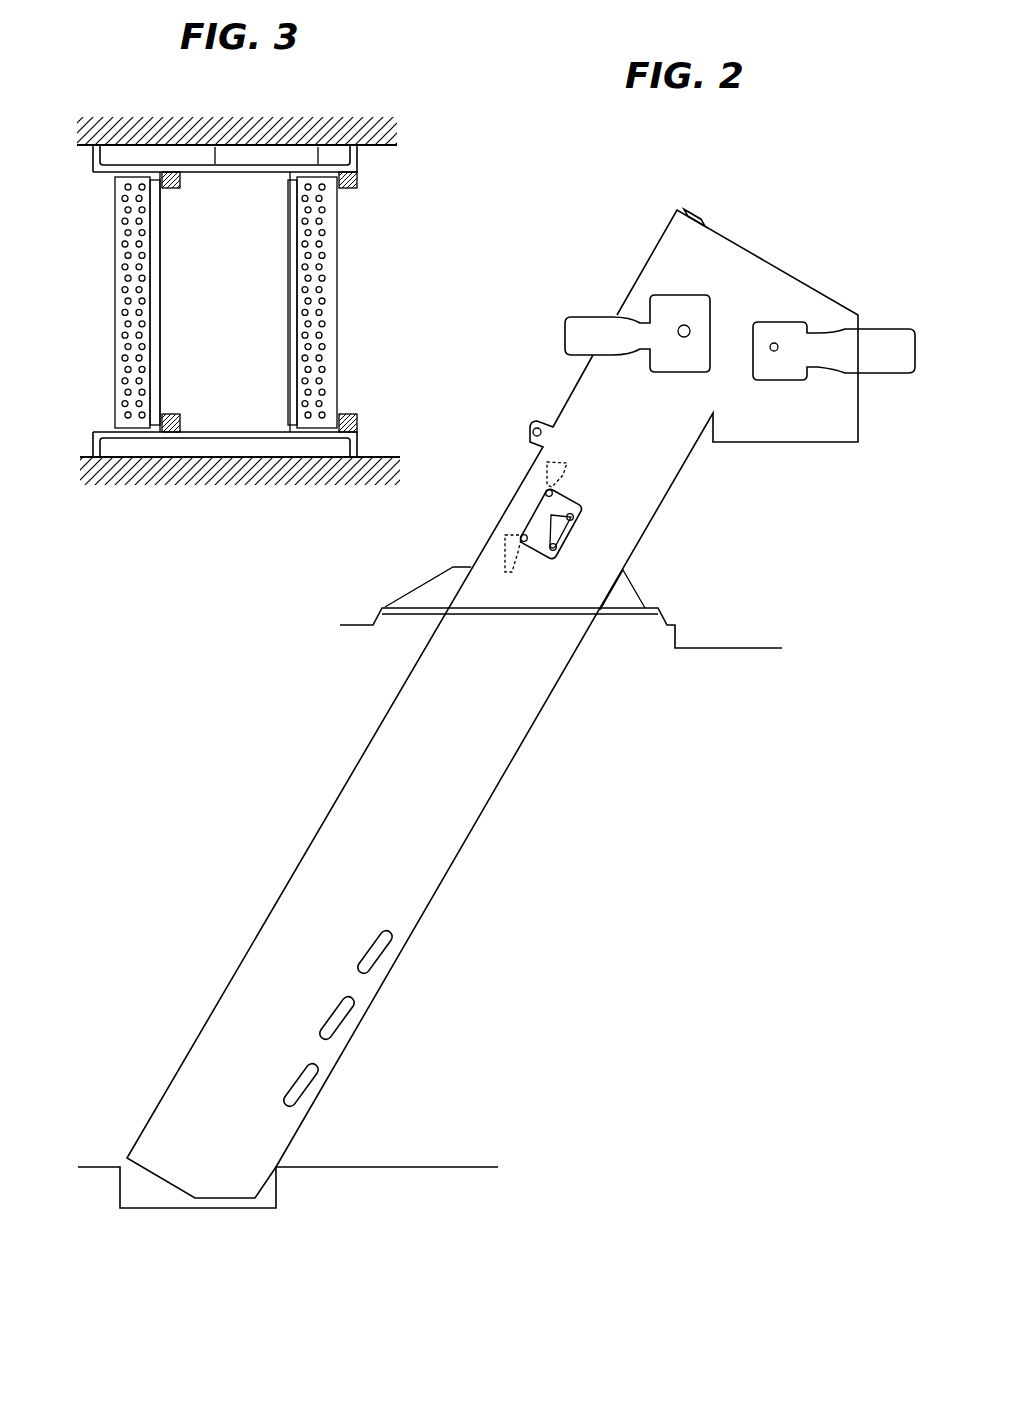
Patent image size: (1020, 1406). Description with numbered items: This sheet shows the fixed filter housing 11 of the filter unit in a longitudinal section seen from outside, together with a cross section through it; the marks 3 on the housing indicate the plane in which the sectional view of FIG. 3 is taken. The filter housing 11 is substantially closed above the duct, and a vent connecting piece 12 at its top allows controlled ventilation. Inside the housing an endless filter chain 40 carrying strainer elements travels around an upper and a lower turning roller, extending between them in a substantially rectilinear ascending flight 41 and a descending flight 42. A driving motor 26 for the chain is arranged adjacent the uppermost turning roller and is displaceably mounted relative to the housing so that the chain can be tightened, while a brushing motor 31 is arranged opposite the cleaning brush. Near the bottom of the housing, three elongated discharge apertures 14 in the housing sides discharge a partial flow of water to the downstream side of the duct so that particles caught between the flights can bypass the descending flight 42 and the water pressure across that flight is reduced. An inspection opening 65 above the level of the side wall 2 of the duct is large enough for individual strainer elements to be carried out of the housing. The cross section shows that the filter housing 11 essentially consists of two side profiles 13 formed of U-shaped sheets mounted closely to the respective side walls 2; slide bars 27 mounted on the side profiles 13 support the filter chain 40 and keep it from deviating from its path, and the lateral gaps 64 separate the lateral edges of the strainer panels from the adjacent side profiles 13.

In FIG. 3, the side wall 2 is at (384, 151).
In FIG. 2, the side wall 2 is at (331, 683).
In FIG. 2, the floor 3 is at (435, 1166).
In FIG. 2, the filter housing 11 is at (592, 398).
In FIG. 2, the vent connecting piece 12 is at (705, 204).
In FIG. 3, the side profiles 13 is at (220, 165).
In FIG. 3, the elongated discharge apertures 14 is at (313, 165).
In FIG. 2, the elongated discharge apertures 14 is at (300, 1093).
In FIG. 2, the driving motor 26 is at (597, 327).
In FIG. 3, the slide bars 27 is at (174, 188).
In FIG. 2, the brushing motor 31 is at (885, 338).
In FIG. 3, the endless chain 40 is at (160, 270).
In FIG. 3, the ascending flight 41 is at (115, 272).
In FIG. 3, the descending flight 42 is at (337, 268).
In FIG. 3, the lateral gaps 64 is at (100, 172).
In FIG. 2, the inspection opening 65 is at (530, 512).